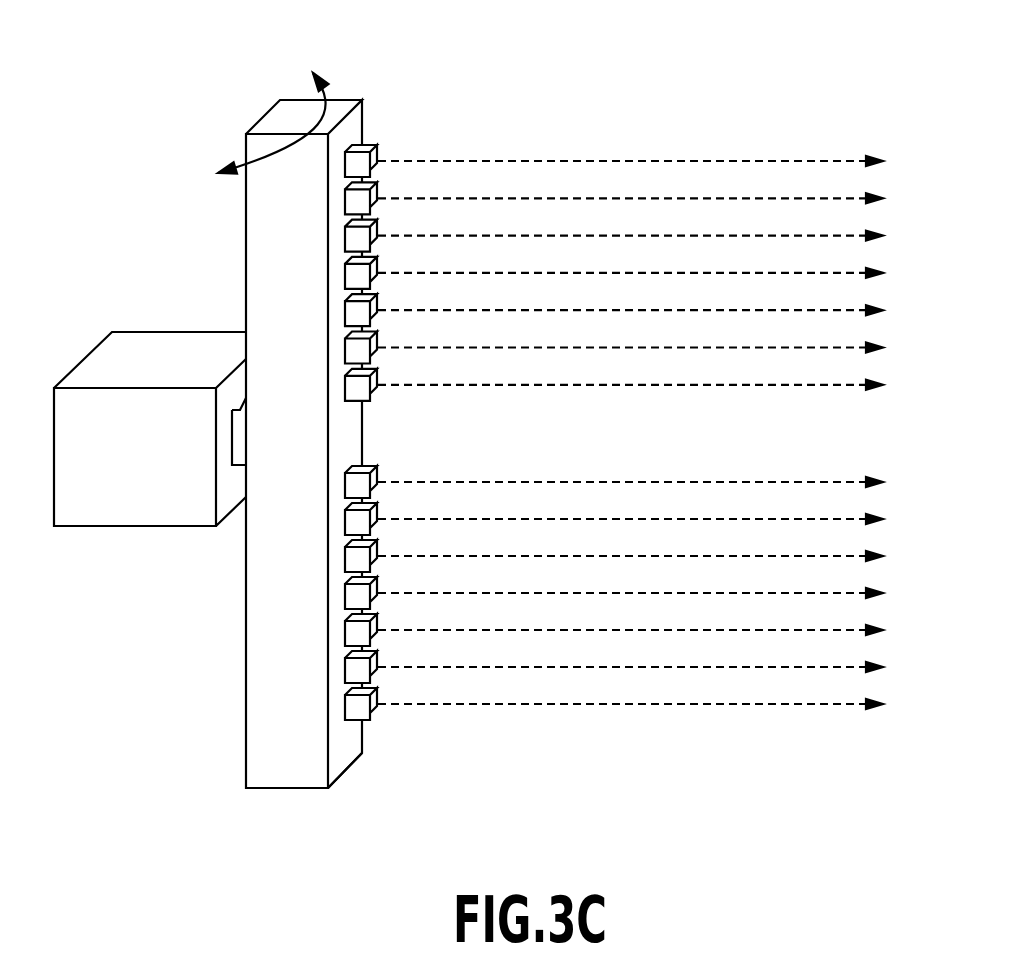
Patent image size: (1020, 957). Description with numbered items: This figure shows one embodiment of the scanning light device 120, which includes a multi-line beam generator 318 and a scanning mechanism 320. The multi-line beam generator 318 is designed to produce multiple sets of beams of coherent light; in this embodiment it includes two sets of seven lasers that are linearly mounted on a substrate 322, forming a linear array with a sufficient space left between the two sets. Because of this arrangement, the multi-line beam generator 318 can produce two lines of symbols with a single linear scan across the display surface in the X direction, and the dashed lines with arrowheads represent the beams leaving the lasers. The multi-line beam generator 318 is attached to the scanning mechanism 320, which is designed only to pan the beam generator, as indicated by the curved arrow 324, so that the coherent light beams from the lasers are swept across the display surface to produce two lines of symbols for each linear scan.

The multi-line beam generator 318 is at (372, 82).
The scanning mechanism 320 is at (95, 527).
The substrate 322 is at (348, 770).
The curved arrow 324 is at (327, 90).
The scanning light device 120 is at (652, 108).